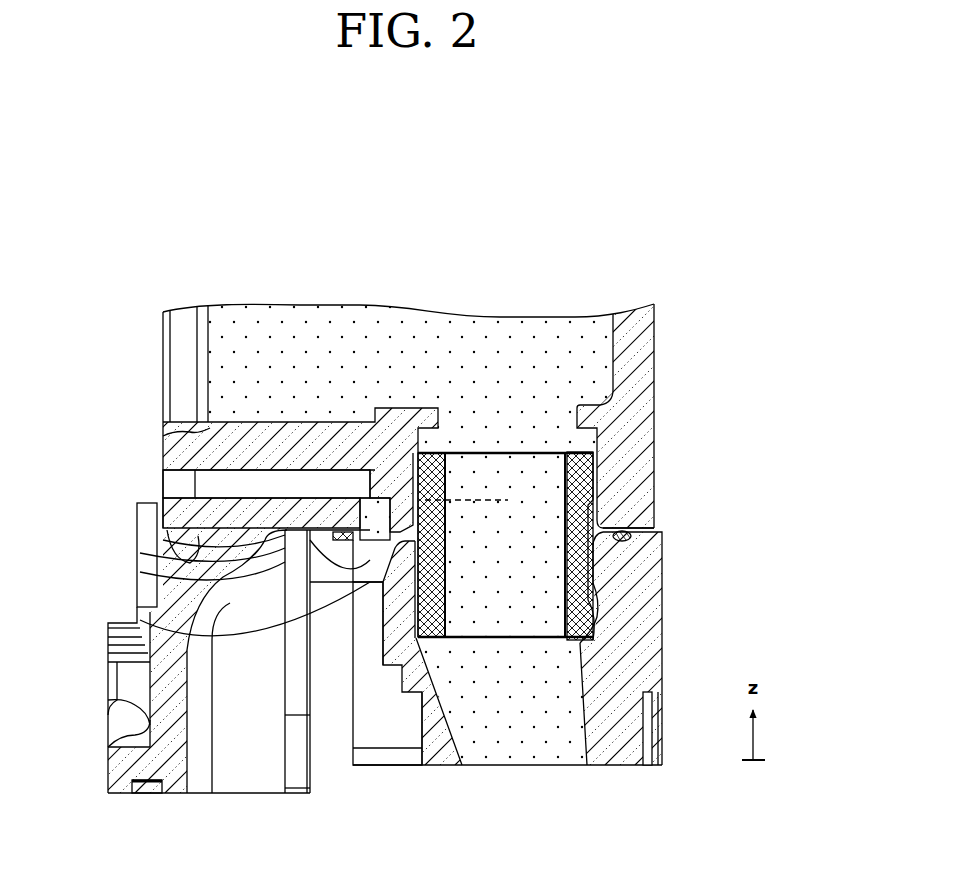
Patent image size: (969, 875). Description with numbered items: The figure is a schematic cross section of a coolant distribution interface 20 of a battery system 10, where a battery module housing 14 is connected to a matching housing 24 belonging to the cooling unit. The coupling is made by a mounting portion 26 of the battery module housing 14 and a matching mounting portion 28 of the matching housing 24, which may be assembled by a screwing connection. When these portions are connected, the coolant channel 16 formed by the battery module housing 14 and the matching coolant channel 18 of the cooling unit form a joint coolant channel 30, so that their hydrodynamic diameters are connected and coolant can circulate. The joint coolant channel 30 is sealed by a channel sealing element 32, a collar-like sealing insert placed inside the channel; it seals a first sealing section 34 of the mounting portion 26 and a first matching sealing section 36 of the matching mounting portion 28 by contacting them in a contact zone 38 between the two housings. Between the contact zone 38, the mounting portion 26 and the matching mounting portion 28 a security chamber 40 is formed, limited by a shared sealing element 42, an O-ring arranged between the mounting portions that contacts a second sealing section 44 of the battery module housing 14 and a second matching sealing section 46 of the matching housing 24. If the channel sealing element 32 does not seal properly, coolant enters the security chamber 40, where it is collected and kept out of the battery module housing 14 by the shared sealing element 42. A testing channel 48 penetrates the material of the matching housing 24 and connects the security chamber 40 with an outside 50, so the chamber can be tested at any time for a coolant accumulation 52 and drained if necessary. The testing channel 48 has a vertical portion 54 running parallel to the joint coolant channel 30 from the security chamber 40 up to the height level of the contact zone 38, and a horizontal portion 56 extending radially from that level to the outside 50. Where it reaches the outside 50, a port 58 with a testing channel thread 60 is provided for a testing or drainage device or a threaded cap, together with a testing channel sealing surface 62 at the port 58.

The battery system 10 is at (192, 187).
The coolant distribution interface 20 is at (286, 222).
The outside 50 is at (82, 368).
The battery module housing 14 is at (441, 765).
The coolant channel 16 is at (521, 765).
The matching coolant channel 18 is at (505, 400).
The matching housing 24 is at (200, 438).
The mounting portion 26 is at (662, 534).
The matching mounting portion 28 is at (654, 508).
The joint coolant channel 30 is at (470, 478).
The channel sealing element 32 is at (474, 765).
The first sealing section 34 is at (603, 588).
The first matching sealing section 36 is at (402, 470).
The contact zone 38 is at (410, 500).
The security chamber 40 is at (250, 562).
The shared sealing element 42 is at (268, 528).
The second sealing section 44 is at (188, 630).
The second matching sealing section 46 is at (265, 548).
The testing channel 48 is at (250, 480).
The coolant accumulation 52 is at (354, 508).
The vertical portion 54 is at (358, 487).
The horizontal portion 56 is at (281, 460).
The port 58 is at (162, 482).
The testing channel thread 60 is at (177, 462).
The testing channel sealing surface 62 is at (165, 512).